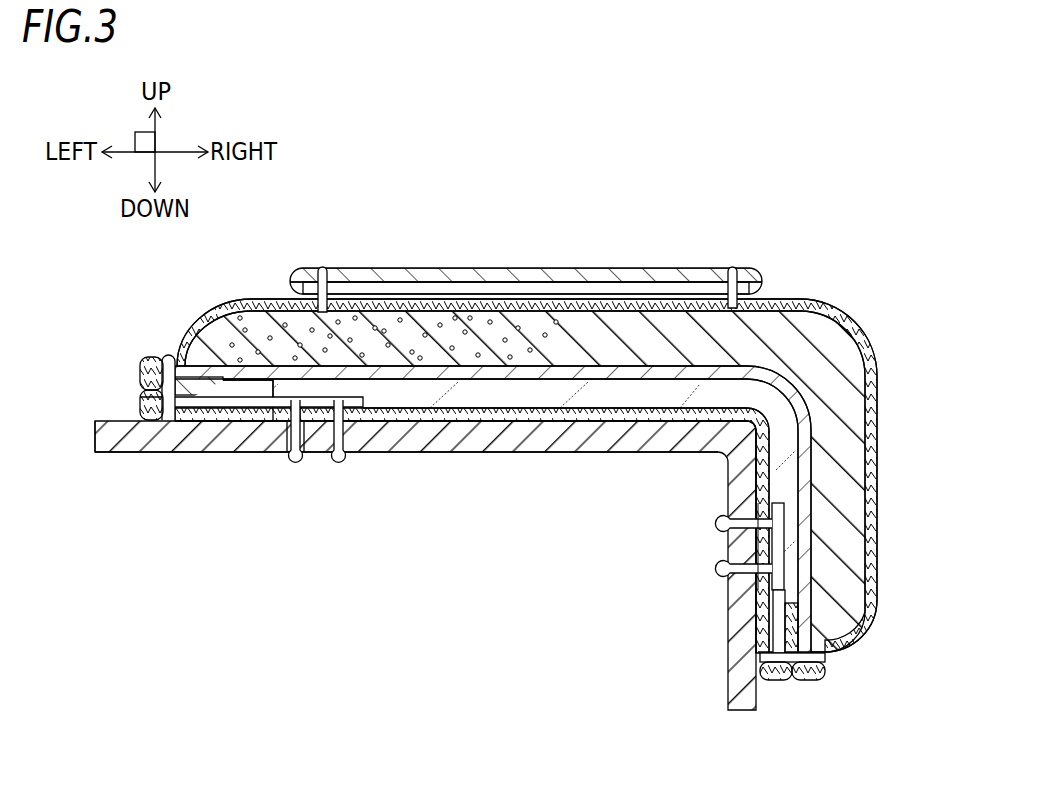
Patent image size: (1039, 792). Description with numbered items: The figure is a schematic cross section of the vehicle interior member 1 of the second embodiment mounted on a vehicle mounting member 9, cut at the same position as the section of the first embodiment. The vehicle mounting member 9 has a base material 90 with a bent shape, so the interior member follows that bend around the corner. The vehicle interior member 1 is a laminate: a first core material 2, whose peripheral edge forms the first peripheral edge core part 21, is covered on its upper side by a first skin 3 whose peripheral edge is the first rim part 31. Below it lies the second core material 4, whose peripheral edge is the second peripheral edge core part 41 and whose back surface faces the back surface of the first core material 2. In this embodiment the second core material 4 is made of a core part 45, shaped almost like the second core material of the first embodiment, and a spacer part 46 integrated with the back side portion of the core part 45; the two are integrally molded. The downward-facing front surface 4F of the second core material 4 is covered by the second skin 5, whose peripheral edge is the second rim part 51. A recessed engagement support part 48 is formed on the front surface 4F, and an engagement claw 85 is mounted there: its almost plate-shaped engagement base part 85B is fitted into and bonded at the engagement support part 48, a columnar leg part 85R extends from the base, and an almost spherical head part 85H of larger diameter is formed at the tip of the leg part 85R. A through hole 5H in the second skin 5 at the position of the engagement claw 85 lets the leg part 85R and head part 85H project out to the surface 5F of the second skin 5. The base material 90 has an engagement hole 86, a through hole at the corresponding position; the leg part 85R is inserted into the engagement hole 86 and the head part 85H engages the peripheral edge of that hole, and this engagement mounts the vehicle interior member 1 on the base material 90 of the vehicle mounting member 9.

The vehicle interior member 1 is at (495, 465).
The first core material 2 is at (527, 459).
The first peripheral edge core part 21 is at (235, 332).
The first skin 3 is at (760, 293).
The first rim part 31 is at (150, 358).
The second core material 4 is at (493, 509).
The core part 45 is at (432, 395).
The spacer part 46 is at (500, 375).
The front surface of second core material 4F is at (555, 410).
The second skin 5 is at (425, 565).
The surface of second skin 5F is at (535, 423).
The through hole 5H is at (352, 385).
The vehicle mounting member 9 is at (102, 468).
The base material 90 is at (157, 443).
The second peripheral edge core part 41 is at (185, 405).
The engagement support part 48 is at (335, 398).
The second rim part 51 is at (140, 405).
The engagement claw 85 is at (541, 399).
The engagement base part 85B is at (302, 398).
The leg part 85R is at (290, 440).
The head part 85H is at (294, 463).
The engagement hole 86 is at (303, 450).